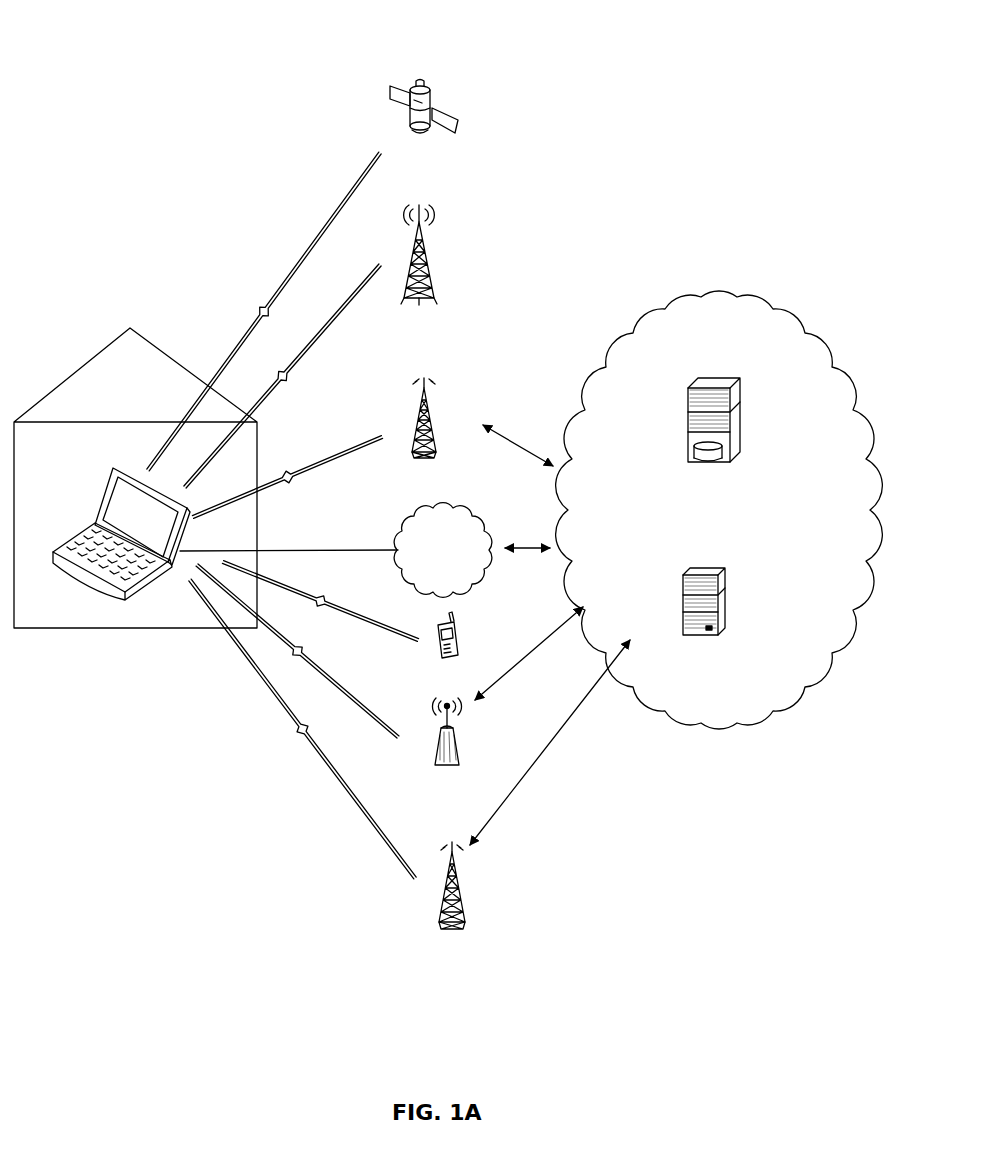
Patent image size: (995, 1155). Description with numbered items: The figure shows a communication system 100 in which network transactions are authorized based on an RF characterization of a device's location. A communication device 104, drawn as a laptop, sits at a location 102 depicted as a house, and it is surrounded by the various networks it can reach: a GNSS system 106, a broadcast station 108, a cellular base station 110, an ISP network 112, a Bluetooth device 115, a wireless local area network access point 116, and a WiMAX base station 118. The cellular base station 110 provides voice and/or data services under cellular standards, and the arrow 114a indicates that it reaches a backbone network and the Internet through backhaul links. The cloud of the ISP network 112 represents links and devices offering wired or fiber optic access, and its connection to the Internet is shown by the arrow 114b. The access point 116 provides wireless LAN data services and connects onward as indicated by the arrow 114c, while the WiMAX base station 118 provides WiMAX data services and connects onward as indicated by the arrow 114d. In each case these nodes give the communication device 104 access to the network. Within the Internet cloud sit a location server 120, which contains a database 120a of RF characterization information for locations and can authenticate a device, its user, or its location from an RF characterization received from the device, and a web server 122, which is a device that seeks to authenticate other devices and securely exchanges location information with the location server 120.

The communication system 100 is at (136, 64).
The location 102 is at (80, 372).
The communication device 104 is at (162, 582).
The GNSS system 106 is at (458, 118).
The broadcast station 108 is at (428, 276).
The cellular base station 110 is at (436, 430).
The ISP network 112 is at (483, 525).
The arrow 114a is at (514, 446).
The arrow 114b is at (530, 556).
The arrow 114c is at (545, 660).
The arrow 114d is at (585, 738).
The Bluetooth device 115 is at (458, 632).
The wireless local area network access point 116 is at (458, 750).
The WiMAX base station 118 is at (465, 900).
The location server 120 is at (719, 422).
The database 120a is at (740, 440).
The web server 122 is at (728, 584).